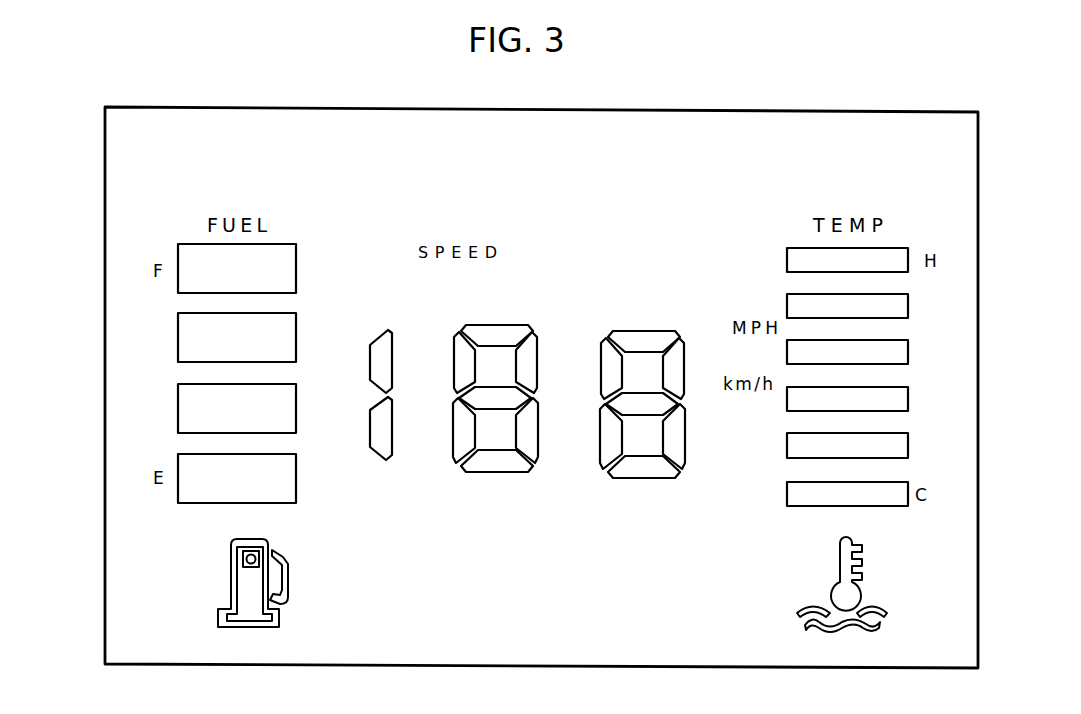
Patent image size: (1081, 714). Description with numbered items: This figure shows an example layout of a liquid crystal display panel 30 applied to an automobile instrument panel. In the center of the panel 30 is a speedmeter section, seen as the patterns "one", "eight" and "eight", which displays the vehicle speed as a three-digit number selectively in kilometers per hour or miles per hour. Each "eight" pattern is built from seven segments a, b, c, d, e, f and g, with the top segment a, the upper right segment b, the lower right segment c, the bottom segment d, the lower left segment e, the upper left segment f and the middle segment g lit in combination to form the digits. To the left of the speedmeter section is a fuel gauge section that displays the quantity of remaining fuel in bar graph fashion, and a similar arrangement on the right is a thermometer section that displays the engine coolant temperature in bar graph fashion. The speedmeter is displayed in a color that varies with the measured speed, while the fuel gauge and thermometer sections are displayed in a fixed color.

The display panel 30 is at (976, 130).
The segment a is at (644, 342).
The segment b is at (673, 368).
The segment c is at (674, 436).
The segment d is at (644, 467).
The segment e is at (611, 436).
The segment f is at (611, 368).
The segment g is at (642, 405).